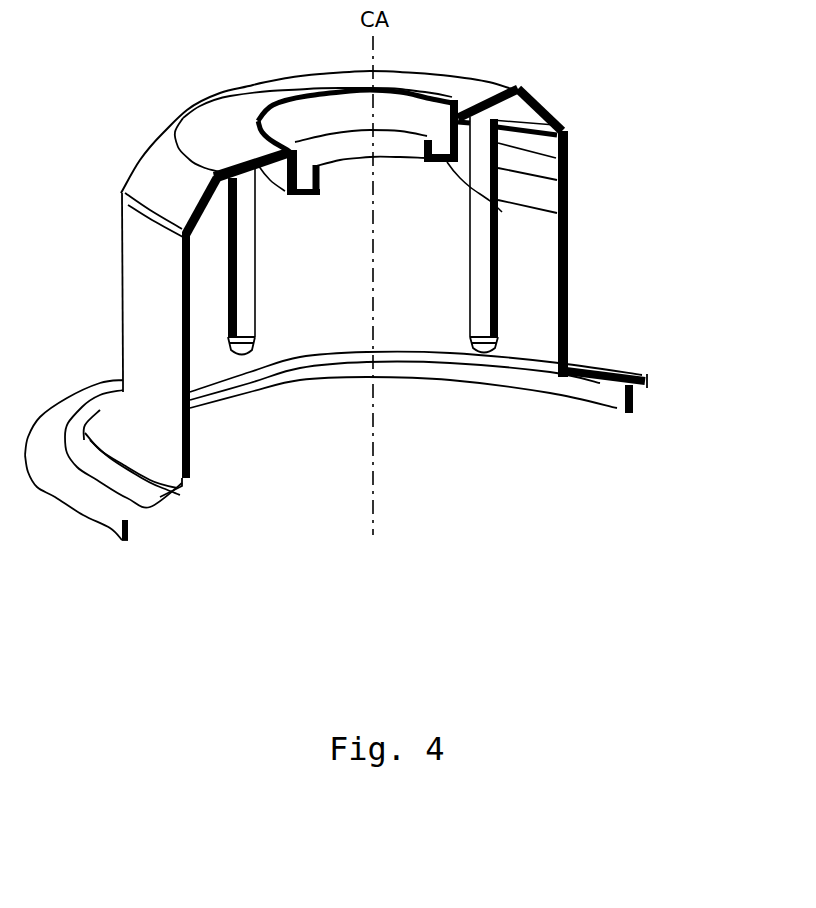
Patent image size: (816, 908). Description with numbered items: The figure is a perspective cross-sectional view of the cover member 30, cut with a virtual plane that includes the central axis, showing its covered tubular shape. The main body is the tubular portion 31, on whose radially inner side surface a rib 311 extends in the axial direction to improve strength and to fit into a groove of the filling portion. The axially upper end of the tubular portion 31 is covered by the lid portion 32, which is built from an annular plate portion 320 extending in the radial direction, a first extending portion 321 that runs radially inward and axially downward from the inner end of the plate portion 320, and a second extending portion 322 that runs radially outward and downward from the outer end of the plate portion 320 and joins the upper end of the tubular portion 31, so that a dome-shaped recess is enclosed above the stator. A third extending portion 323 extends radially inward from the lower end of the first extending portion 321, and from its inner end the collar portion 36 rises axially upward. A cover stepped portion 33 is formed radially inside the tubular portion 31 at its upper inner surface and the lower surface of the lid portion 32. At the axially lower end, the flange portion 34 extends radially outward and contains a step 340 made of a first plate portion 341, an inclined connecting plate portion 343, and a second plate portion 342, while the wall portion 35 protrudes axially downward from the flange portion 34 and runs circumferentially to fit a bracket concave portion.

The cover member 30 is at (130, 86).
The tubular portion 31 is at (569, 247).
The rib 311 is at (480, 262).
The lid portion 32 is at (654, 55).
The plate portion 320 is at (495, 83).
The first extending portion 321 is at (495, 153).
The second extending portion 322 is at (557, 118).
The third extending portion 323 is at (496, 208).
The cover stepped portion 33 is at (185, 243).
The flange portion 34 is at (729, 305).
The step 340 is at (594, 392).
The first plate portion 341 is at (620, 388).
The second plate portion 342 is at (590, 365).
The connecting plate portion 343 is at (606, 378).
The wall portion 35 is at (627, 410).
The collar portion 36 is at (432, 135).